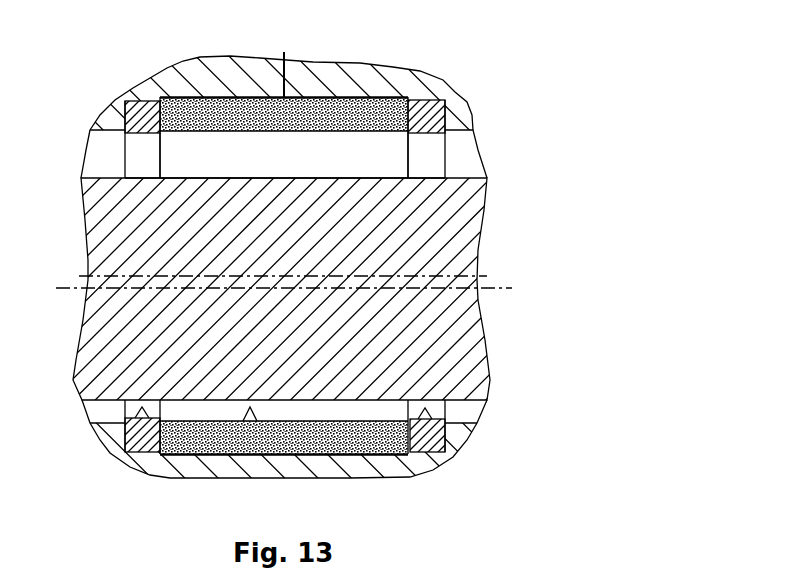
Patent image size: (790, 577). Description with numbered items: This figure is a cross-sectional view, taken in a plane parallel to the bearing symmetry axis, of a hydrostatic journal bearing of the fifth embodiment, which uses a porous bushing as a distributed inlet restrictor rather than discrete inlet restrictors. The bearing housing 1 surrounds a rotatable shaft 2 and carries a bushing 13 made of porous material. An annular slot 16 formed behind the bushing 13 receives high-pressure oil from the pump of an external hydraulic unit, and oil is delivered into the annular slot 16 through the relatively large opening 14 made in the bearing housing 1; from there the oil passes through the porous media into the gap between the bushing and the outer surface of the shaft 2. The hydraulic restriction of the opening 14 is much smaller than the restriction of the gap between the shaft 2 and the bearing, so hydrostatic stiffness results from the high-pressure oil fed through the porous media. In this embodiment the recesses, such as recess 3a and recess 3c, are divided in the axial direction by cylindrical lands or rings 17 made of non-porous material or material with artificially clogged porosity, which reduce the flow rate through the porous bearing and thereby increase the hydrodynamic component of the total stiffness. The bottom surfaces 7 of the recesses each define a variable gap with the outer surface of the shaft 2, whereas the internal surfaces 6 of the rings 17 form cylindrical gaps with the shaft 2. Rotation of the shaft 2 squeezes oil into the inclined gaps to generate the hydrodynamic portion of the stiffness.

The bearing housing 1 is at (422, 79).
The rotatable shaft 2 is at (444, 217).
The recess 3a is at (295, 167).
The recess 3c is at (359, 412).
The internal surface of ring 6 is at (128, 452).
The bottom surface of recess 7 is at (143, 117).
The bushing 13 is at (350, 110).
The opening 14 is at (267, 97).
The annular slot 16 is at (190, 143).
The ring 17 is at (123, 108).